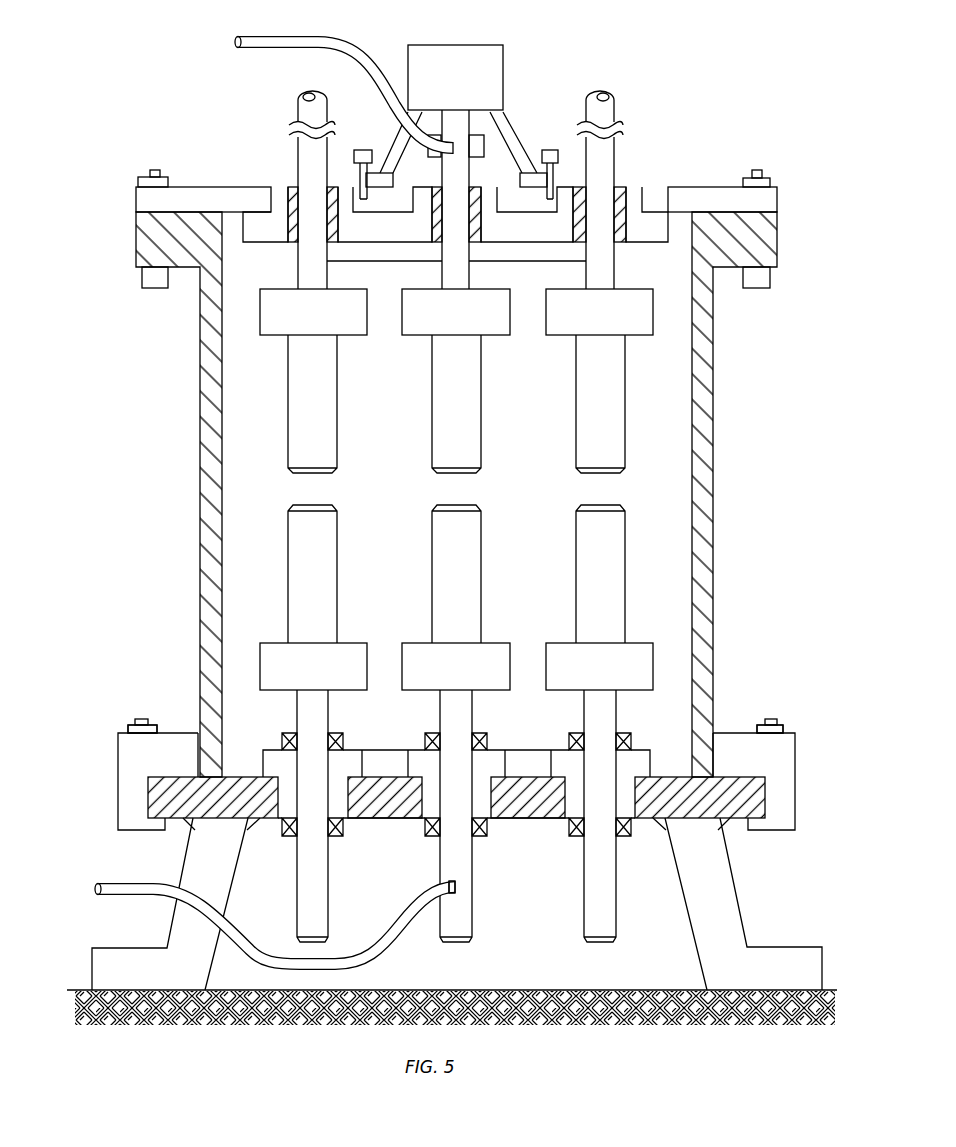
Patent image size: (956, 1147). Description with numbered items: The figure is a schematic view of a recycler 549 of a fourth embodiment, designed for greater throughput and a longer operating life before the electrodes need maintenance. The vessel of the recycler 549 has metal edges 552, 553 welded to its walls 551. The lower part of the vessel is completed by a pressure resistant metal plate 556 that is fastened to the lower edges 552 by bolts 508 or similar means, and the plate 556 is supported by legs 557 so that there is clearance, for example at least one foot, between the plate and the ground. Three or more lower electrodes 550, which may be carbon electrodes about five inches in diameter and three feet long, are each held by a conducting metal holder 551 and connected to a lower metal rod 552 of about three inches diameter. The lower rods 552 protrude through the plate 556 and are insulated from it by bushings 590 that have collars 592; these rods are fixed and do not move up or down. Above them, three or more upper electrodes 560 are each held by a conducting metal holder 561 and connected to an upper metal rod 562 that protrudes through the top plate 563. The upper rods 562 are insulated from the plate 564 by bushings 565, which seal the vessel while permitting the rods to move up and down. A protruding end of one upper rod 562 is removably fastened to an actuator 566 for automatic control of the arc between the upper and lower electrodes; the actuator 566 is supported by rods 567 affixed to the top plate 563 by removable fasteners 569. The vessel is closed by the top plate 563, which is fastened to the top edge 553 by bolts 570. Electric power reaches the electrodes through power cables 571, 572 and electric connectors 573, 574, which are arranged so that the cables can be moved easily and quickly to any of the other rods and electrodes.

The recycler 549 is at (160, 100).
The bolts 508 is at (140, 724).
The lower electrodes 550 is at (305, 562).
The conducting metal holder 551 is at (213, 518).
The lower metal rod 552 is at (145, 752).
The top edge 553 is at (160, 238).
The pressure resistant metal plate 556 is at (150, 795).
The legs 557 is at (178, 925).
The upper electrodes 560 is at (305, 405).
The conducting metal holder 561 is at (282, 312).
The upper metal rod 562 is at (312, 270).
The top plate 563 is at (252, 200).
The plate 564 is at (660, 205).
The bushings 565 is at (640, 200).
The actuator 566 is at (455, 60).
The rods 567 is at (385, 140).
The removable fasteners 569 is at (366, 150).
The bolts 570 is at (160, 182).
The power cable 571 is at (258, 48).
The power cable 572 is at (238, 930).
The electric connector 573 is at (484, 147).
The electric connector 574 is at (458, 883).
The bushings 590 is at (360, 757).
The collars 592 is at (285, 741).